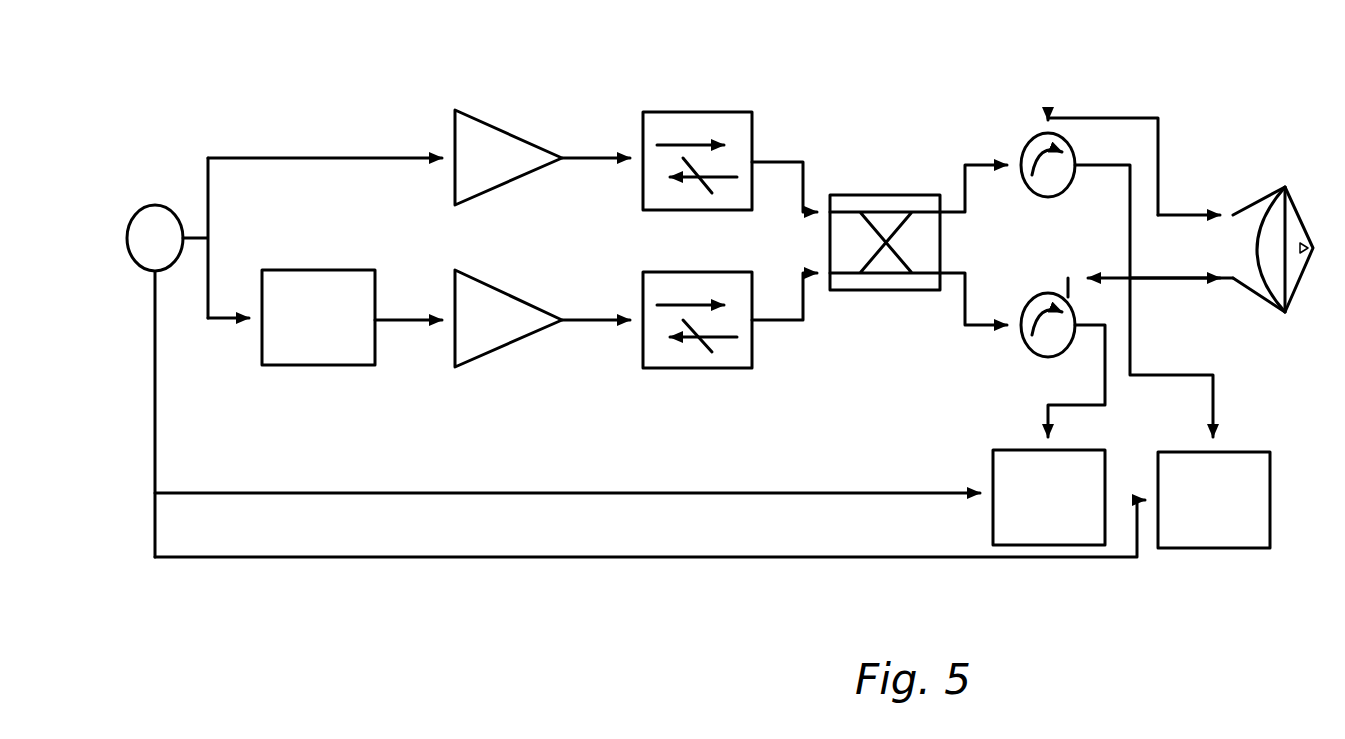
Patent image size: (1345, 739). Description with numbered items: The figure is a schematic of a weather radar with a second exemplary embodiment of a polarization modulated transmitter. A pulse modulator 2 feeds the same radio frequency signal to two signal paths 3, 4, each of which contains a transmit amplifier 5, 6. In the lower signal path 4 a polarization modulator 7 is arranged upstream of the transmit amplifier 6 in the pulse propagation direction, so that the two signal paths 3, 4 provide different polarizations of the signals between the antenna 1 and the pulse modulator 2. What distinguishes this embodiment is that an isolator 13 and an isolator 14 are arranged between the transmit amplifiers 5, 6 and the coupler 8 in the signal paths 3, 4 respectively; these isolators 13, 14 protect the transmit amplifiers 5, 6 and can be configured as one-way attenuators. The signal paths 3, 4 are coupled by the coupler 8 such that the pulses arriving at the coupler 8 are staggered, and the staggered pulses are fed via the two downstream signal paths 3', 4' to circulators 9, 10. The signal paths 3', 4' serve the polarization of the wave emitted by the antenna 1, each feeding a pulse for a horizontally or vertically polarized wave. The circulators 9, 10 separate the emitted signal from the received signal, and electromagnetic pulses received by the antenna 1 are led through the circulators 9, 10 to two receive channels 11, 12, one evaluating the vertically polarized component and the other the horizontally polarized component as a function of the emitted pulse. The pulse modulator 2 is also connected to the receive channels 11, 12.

The antenna 1 is at (1303, 202).
The pulse modulator 2 is at (143, 205).
The signal path 3 is at (596, 94).
The signal path 4 is at (596, 386).
The signal path 3' is at (972, 130).
The signal path 4' is at (973, 336).
The transmit amplifier 5 is at (492, 140).
The transmit amplifier 6 is at (490, 330).
The polarization modulator 7 is at (314, 365).
The coupler 8 is at (877, 195).
The circulator 9 is at (1040, 196).
The circulator 10 is at (1038, 356).
The receive channel 11 is at (1005, 516).
The receive channel 12 is at (1252, 521).
The isolator 13 is at (685, 125).
The isolator 14 is at (685, 360).